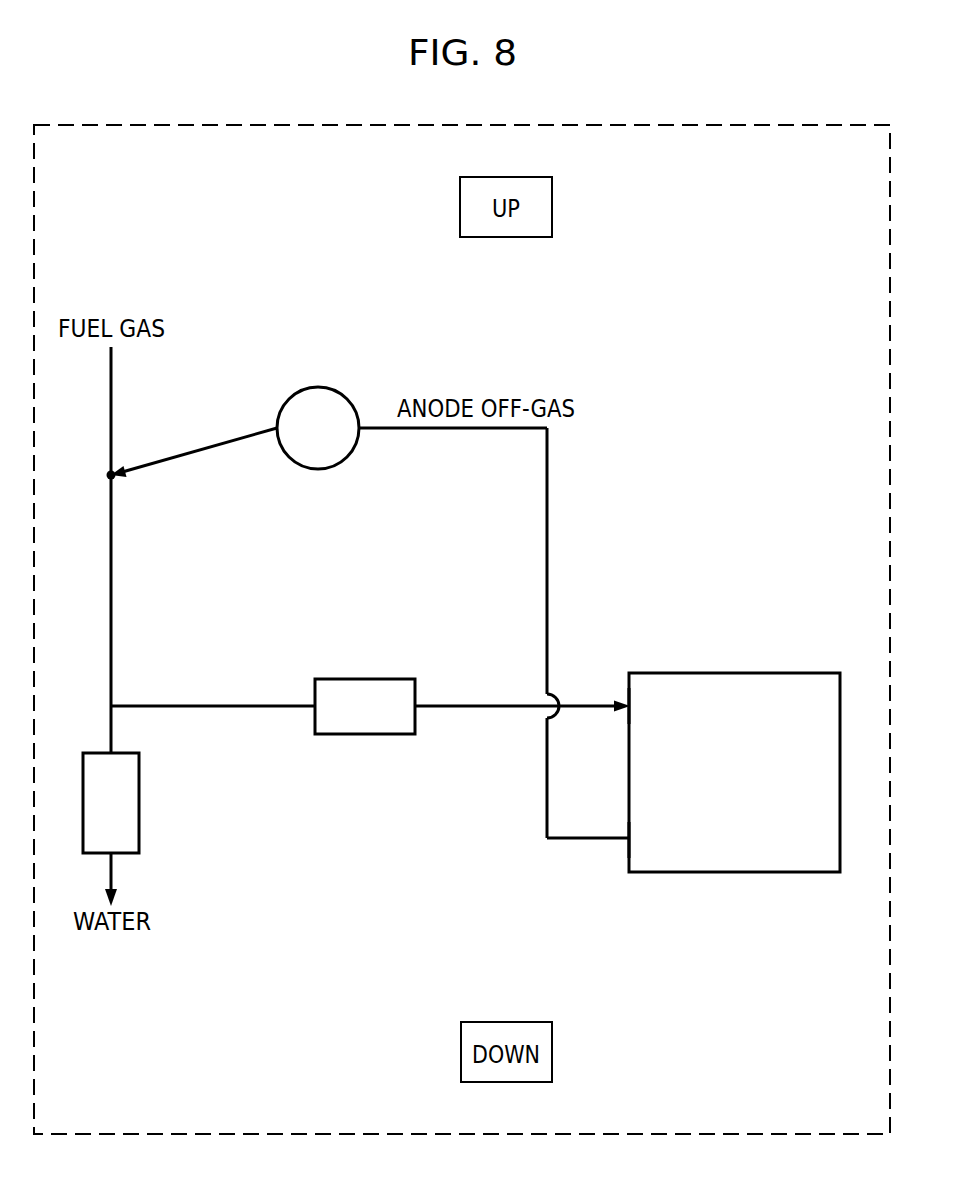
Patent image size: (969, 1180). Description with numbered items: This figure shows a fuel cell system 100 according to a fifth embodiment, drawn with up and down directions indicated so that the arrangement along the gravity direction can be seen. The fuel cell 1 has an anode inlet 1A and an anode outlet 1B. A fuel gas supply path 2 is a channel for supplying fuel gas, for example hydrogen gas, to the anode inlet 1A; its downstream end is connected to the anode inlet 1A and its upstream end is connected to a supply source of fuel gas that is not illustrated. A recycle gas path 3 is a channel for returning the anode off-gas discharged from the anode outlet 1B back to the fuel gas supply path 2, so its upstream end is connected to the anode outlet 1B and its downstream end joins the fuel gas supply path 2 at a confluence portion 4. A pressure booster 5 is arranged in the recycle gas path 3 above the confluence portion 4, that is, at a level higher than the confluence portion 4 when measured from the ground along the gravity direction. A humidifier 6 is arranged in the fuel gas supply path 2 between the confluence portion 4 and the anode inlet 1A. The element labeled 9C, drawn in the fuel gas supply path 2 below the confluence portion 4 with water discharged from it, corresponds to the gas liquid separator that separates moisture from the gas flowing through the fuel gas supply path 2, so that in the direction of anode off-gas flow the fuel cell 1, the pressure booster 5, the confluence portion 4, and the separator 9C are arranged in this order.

The fuel cell system 100 is at (658, 318).
The fuel cell 1 is at (744, 789).
The anode inlet 1A is at (641, 706).
The anode outlet 1B is at (651, 840).
The fuel gas supply path 2 is at (204, 709).
The recycle gas path 3 is at (376, 427).
The confluence portion 4 is at (108, 479).
The pressure booster 5 is at (327, 441).
The humidifier 6 is at (374, 724).
The gas-liquid separator / water discharge unit 9C is at (131, 821).